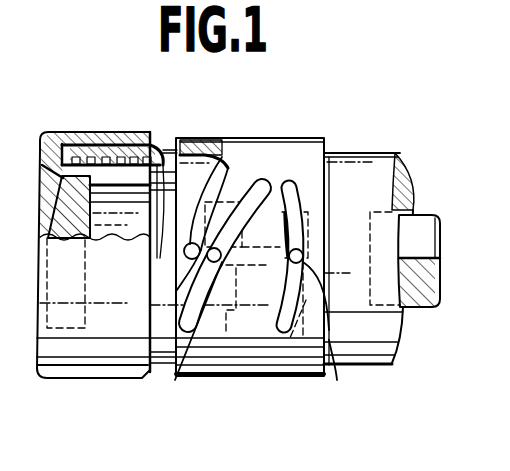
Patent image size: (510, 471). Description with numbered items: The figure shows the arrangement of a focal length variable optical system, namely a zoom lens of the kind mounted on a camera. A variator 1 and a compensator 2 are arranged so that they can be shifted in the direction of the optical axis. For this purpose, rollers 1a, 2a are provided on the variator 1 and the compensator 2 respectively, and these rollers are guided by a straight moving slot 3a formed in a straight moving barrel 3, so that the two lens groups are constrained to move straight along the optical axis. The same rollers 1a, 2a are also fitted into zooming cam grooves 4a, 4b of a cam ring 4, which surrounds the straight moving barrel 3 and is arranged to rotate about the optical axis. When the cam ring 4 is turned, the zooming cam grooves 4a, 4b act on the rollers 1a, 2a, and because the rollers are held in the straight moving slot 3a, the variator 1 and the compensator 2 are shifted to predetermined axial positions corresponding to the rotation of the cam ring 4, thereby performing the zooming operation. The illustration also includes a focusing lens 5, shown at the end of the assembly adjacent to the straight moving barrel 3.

The variator 1 is at (205, 378).
The roller 1a is at (178, 379).
The compensator 2 is at (287, 366).
The roller 2a is at (337, 367).
The straight moving barrel 3 is at (192, 177).
The straight moving slot 3a is at (226, 160).
The cam ring 4 is at (267, 150).
The zooming cam groove 4a is at (258, 181).
The zooming cam groove 4b is at (293, 202).
The focusing lens 5 is at (73, 330).